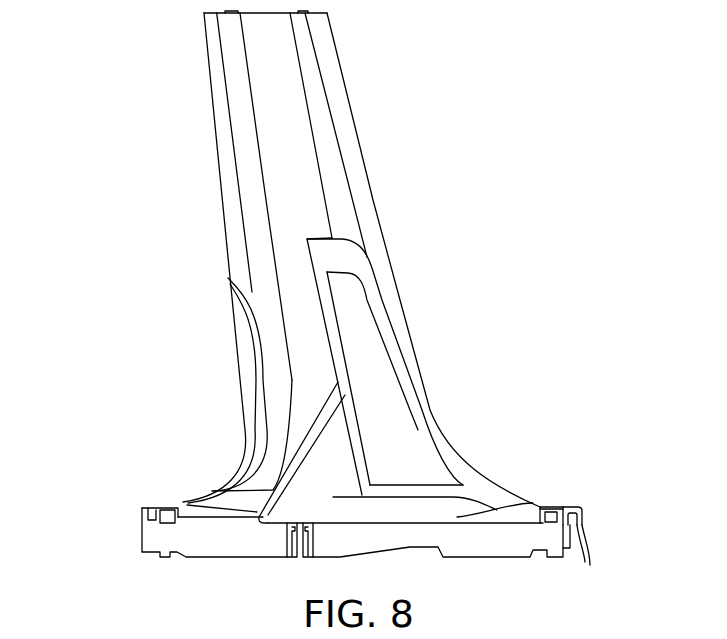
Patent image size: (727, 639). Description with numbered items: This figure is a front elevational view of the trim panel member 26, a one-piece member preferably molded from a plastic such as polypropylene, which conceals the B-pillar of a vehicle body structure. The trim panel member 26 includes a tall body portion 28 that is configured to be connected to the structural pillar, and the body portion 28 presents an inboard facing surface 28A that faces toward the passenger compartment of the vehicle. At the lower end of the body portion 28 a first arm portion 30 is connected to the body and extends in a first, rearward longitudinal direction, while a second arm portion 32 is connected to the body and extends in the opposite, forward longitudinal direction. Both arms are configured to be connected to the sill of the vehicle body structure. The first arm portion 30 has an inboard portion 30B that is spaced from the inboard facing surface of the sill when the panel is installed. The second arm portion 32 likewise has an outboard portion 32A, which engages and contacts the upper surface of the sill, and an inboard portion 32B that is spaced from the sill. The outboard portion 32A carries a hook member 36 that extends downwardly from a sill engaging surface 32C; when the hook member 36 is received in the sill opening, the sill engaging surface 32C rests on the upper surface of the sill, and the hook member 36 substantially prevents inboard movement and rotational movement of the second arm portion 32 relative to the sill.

The trim panel member 26 is at (500, 217).
The body portion 28 is at (214, 125).
The inboard facing surface 28A is at (278, 93).
The first arm portion 30 is at (170, 507).
The inboard portion 30B is at (157, 536).
The second arm portion 32 is at (553, 503).
The outboard portion 32A is at (583, 508).
The inboard portion 32B is at (530, 557).
The sill engaging surface 32C is at (581, 551).
The hook member 36 is at (578, 525).